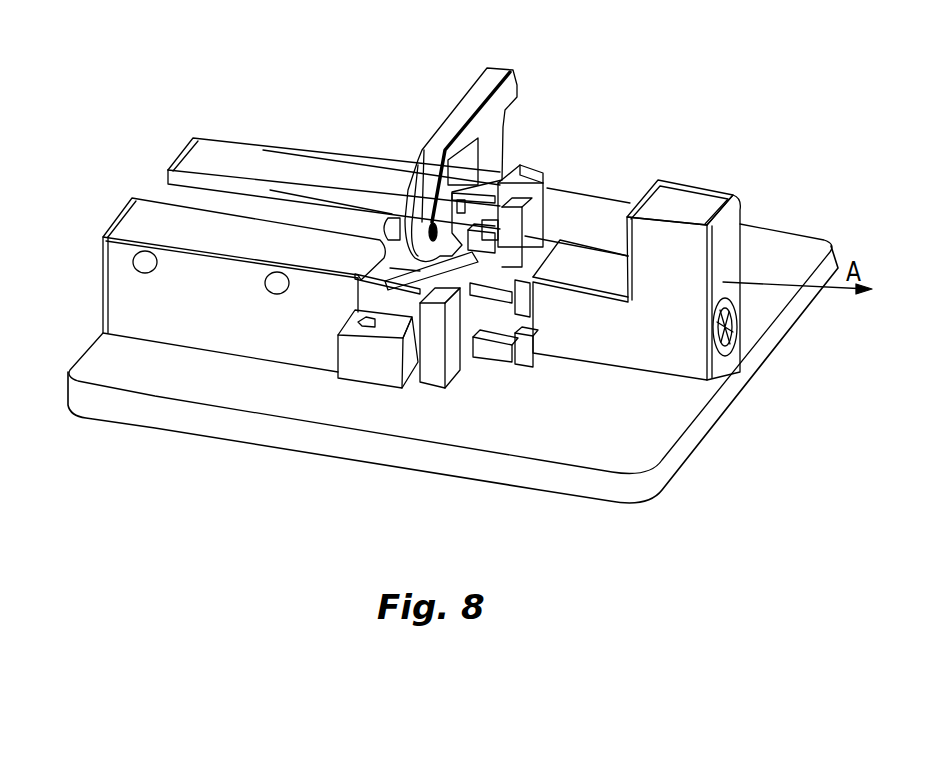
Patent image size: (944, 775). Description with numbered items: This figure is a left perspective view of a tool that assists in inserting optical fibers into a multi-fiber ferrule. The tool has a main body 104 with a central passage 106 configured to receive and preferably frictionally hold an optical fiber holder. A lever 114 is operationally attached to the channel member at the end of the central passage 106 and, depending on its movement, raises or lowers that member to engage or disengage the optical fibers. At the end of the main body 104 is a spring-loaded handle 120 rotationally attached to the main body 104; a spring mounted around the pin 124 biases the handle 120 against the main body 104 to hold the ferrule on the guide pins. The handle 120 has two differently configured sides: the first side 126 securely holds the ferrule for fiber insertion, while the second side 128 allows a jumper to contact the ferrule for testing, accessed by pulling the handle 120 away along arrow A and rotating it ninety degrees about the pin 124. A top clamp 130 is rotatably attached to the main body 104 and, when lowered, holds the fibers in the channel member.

The main body 104 is at (125, 302).
The central passage 106 is at (172, 197).
The lever 114 is at (357, 372).
The handle 120 is at (730, 267).
The pin 124 is at (740, 327).
The first side 126 is at (530, 215).
The second side 128 is at (547, 300).
The top clamp 130 is at (492, 62).